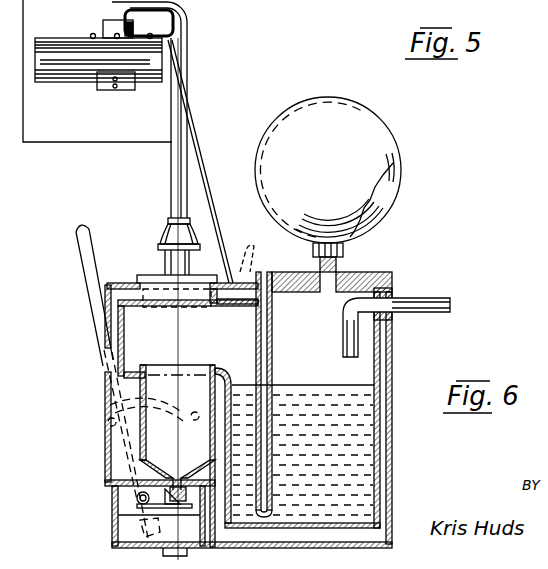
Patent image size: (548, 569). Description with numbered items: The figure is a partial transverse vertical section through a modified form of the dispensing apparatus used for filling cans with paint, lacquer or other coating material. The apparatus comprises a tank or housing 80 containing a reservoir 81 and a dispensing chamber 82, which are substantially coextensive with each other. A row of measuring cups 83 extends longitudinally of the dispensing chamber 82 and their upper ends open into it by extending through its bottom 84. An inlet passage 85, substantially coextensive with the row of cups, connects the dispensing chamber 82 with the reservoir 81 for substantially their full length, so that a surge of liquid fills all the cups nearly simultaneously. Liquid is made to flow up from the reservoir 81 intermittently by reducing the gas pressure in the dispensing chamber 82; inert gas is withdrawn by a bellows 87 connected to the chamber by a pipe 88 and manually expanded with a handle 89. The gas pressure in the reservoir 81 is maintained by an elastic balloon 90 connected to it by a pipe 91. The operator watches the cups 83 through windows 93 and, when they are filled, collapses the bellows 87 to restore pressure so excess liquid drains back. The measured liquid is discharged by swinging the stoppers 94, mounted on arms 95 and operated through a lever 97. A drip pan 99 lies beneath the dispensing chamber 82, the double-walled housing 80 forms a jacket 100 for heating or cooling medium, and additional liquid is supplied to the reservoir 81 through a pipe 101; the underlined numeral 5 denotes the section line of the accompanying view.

The outlet spout 5 is at (165, 562).
The tank or housing 80 is at (392, 353).
The reservoir 81 is at (365, 376).
The dispensing chamber 82 is at (128, 347).
The measuring cups 83 is at (160, 390).
The bottom 84 is at (128, 377).
The inlet passage 85 is at (242, 500).
The bellows 87 is at (78, 50).
The pipe 88 is at (181, 50).
The handle 89 is at (112, 77).
The balloon 90 is at (373, 143).
The pipe 91 is at (337, 260).
The windows 93 is at (150, 277).
The stoppers 94 is at (187, 492).
The arms 95 is at (165, 490).
The lever 97 is at (88, 263).
The drip pan 99 is at (112, 537).
The jacket 100 is at (392, 415).
The pipe 101 is at (407, 308).